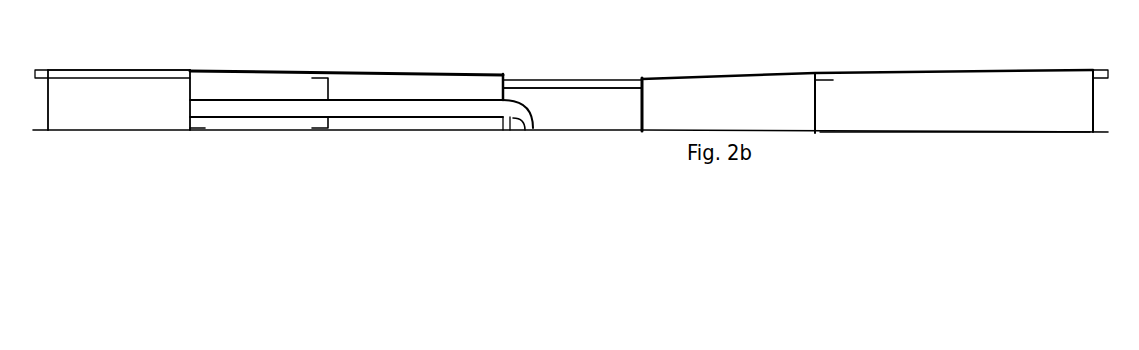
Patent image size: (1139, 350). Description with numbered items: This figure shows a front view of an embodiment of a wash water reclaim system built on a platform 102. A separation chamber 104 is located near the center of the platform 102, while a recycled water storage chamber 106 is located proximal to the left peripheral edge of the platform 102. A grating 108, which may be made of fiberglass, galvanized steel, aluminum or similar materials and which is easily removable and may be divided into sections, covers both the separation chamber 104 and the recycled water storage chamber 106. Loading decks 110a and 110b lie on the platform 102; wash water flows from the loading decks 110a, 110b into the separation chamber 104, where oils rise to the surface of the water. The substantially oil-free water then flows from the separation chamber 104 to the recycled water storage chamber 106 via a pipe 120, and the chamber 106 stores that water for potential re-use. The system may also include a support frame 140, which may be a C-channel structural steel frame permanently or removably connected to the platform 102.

The platform 102 is at (817, 135).
The separation chamber 104 is at (600, 126).
The recycled water storage chamber 106 is at (135, 117).
The grating 108 is at (92, 78).
The loading deck 110a is at (350, 59).
The loading deck 110b is at (897, 54).
The pipe 120 is at (293, 107).
The support frame 140 is at (907, 100).